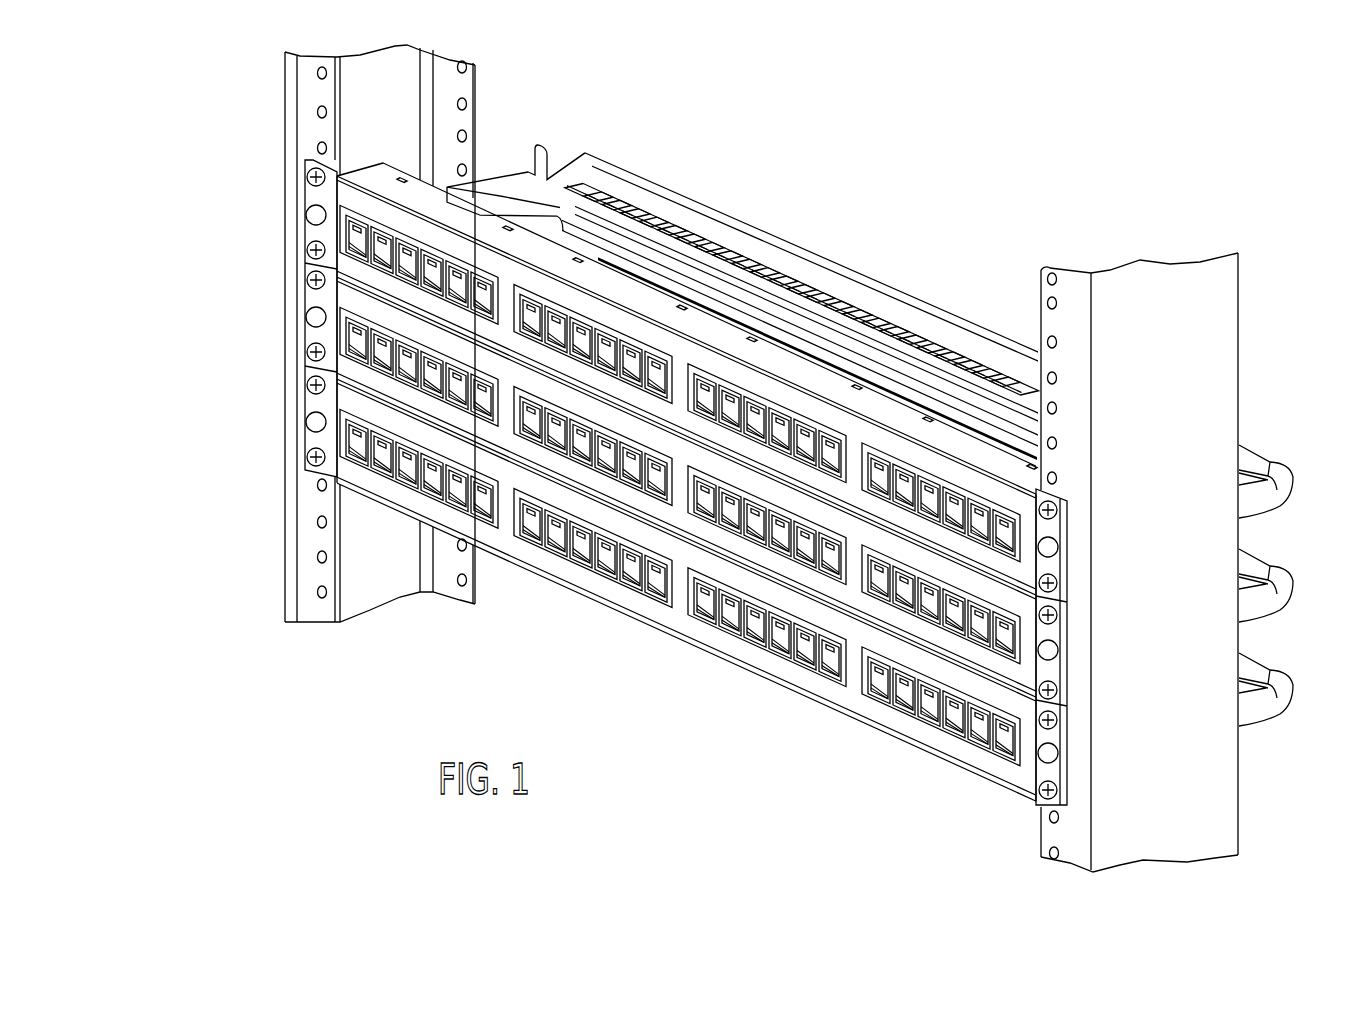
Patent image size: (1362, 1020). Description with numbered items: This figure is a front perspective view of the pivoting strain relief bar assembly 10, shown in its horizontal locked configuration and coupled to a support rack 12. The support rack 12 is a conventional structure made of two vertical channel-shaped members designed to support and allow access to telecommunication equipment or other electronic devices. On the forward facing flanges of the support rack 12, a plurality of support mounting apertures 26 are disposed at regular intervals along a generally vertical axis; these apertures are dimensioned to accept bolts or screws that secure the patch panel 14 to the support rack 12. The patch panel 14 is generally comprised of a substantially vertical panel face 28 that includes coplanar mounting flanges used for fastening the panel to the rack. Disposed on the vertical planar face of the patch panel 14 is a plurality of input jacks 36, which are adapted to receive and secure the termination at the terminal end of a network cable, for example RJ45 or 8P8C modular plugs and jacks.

The pivoting strain relief bar assembly 10 is at (712, 168).
The support rack 12 is at (1137, 318).
The patch panel 14 is at (686, 492).
The support mounting apertures 26 is at (316, 75).
The panel face 28 is at (878, 715).
The input jacks 36 is at (738, 640).